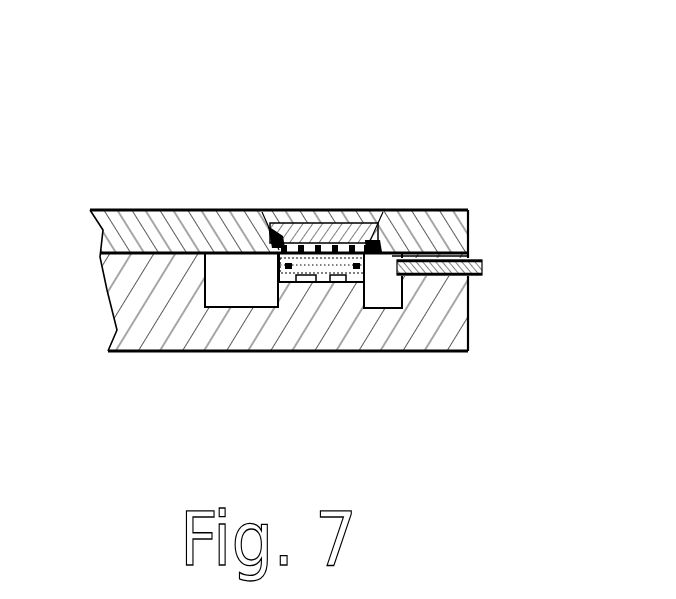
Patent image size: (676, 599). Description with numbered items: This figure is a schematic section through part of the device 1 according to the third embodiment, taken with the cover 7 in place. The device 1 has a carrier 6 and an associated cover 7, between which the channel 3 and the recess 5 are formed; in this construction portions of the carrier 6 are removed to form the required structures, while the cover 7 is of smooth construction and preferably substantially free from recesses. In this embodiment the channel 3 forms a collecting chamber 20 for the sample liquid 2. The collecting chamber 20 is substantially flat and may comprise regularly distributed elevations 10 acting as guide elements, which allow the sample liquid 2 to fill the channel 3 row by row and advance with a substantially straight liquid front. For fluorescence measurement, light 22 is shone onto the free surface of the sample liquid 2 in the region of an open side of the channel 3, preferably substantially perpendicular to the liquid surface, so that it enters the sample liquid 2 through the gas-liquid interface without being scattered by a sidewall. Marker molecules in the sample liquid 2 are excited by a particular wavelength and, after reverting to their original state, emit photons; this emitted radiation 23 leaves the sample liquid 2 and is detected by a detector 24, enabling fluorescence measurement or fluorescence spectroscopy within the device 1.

The device 1 is at (148, 156).
The sample liquid 2 is at (394, 248).
The channel 3 is at (241, 187).
The collecting chamber 20 is at (277, 238).
The recess 5 is at (217, 286).
The carrier 6 is at (408, 340).
The cover 7 is at (468, 212).
The elevations 10 is at (327, 284).
The light 22 is at (395, 246).
The emitted radiation 23 is at (333, 246).
The detector 24 is at (352, 246).